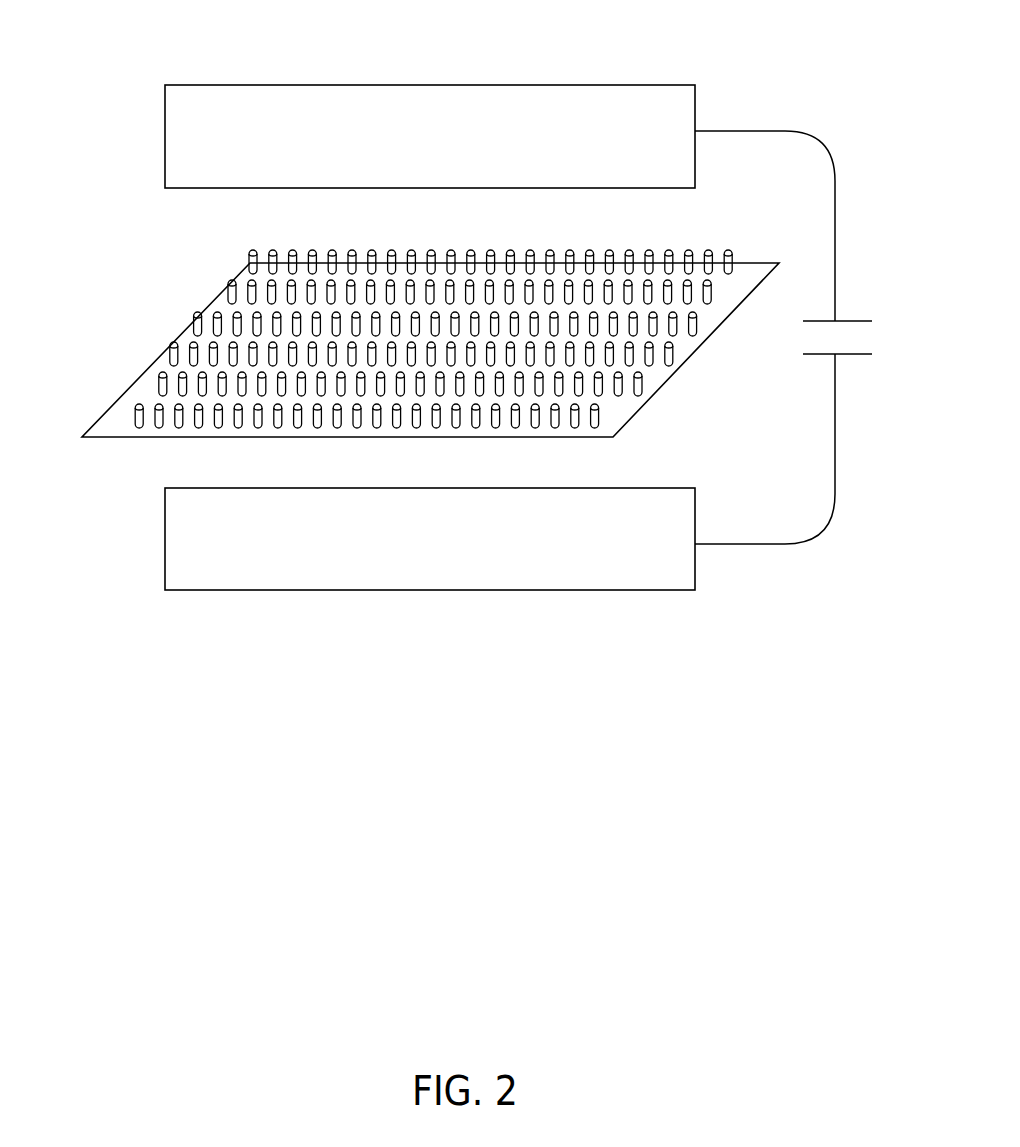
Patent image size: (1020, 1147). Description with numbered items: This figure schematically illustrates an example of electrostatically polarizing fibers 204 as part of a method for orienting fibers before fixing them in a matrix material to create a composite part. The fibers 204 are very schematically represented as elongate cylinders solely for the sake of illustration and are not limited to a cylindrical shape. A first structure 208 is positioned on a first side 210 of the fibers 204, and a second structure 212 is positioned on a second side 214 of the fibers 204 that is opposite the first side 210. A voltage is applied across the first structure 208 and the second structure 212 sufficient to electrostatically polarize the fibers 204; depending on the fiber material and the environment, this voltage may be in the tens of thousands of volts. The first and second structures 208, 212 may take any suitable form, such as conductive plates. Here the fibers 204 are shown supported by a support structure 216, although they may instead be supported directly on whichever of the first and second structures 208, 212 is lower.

The fibers 204 is at (182, 382).
The first structure 208 is at (543, 85).
The first side 210 is at (445, 230).
The second structure 212 is at (540, 590).
The second side 214 is at (445, 479).
The support structure 216 is at (703, 342).